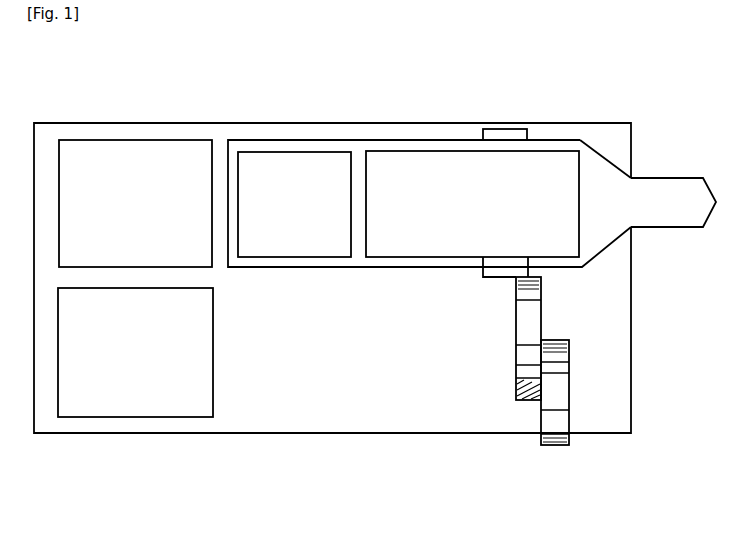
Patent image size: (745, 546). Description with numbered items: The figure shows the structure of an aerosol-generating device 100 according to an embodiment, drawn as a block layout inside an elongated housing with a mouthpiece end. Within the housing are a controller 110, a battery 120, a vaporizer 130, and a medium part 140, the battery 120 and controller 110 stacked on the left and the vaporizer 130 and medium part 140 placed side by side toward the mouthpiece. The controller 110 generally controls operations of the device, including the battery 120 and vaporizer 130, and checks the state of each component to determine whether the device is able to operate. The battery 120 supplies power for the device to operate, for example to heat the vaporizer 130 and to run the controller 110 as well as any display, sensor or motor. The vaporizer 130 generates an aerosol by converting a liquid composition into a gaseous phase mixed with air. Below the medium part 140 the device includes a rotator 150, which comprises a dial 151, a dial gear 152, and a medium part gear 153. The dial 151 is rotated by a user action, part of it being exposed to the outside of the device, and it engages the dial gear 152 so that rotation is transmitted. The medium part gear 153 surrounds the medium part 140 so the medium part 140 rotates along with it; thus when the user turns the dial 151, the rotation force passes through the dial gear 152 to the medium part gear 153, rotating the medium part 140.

The aerosol-generating device 100 is at (627, 87).
The controller 110 is at (135, 417).
The battery 120 is at (135, 140).
The vaporizer 130 is at (294, 152).
The medium part 140 is at (450, 151).
The rotator 150 is at (518, 406).
The dial 151 is at (562, 420).
The dial gear 152 is at (527, 383).
The medium part gear 153 is at (497, 272).